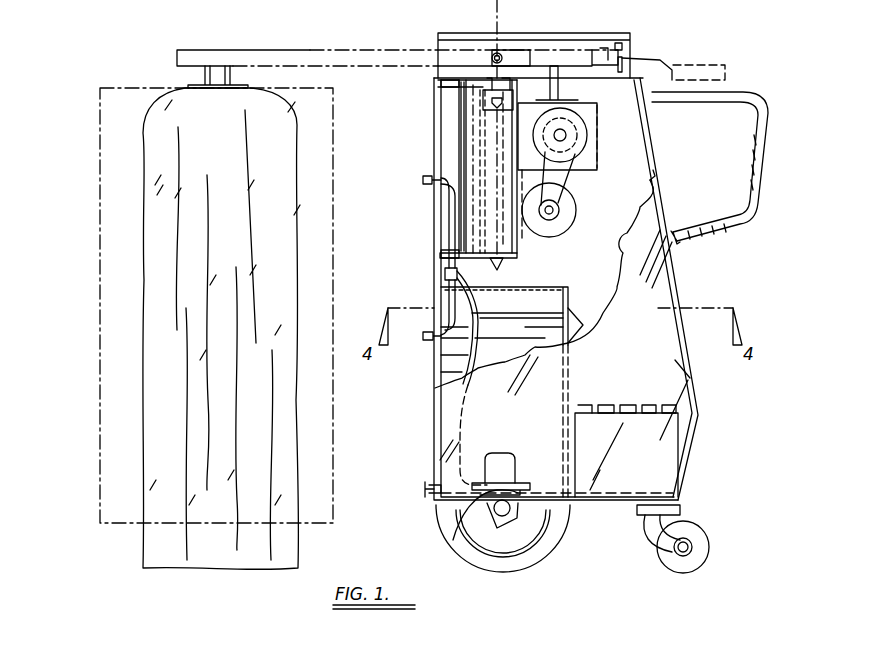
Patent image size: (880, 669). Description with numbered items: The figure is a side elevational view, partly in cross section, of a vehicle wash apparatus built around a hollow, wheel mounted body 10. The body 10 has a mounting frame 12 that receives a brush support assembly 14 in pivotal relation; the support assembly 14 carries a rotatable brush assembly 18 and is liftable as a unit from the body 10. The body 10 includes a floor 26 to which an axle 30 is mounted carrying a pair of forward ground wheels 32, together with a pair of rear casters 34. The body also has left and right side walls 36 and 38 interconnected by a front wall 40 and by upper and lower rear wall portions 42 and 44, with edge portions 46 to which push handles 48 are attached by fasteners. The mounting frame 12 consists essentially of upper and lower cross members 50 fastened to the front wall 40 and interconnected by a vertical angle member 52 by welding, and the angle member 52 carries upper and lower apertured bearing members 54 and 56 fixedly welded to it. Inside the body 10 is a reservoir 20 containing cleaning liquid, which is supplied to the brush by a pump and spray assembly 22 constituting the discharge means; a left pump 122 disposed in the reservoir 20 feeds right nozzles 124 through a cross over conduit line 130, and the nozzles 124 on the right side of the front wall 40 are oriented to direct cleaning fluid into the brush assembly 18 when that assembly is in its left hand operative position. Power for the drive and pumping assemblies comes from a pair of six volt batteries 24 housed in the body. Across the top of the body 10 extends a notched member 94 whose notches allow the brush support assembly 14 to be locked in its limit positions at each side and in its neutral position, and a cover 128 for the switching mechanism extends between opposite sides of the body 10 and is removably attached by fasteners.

The body 10 is at (683, 274).
The mounting frame 12 is at (455, 137).
The brush support assembly 14 is at (362, 42).
The brush assembly 18 is at (140, 165).
The reservoir 20 is at (583, 325).
The pump and spray assembly 22 is at (433, 332).
The batteries 24 is at (668, 437).
The floor 26 is at (633, 490).
The axle 30 is at (493, 502).
The forward ground wheels 32 is at (540, 555).
The rear casters 34 is at (707, 557).
The left side wall 36 is at (656, 379).
The right side wall 38 is at (628, 209).
The front wall 40 is at (446, 210).
The upper rear wall portion 42 is at (655, 135).
The lower rear wall portion 44 is at (690, 480).
The edge portions 46 is at (663, 183).
The push handles 48 is at (760, 170).
The cross members 50 is at (445, 88).
The vertical angle member 52 is at (458, 110).
The upper bearing member 54 is at (513, 92).
The lower bearing member 56 is at (505, 248).
The notched member 94 is at (637, 58).
The left pump 122 is at (511, 462).
The right nozzles 124 is at (422, 180).
The cover 128 is at (618, 32).
The cross over conduit line 130 is at (470, 283).